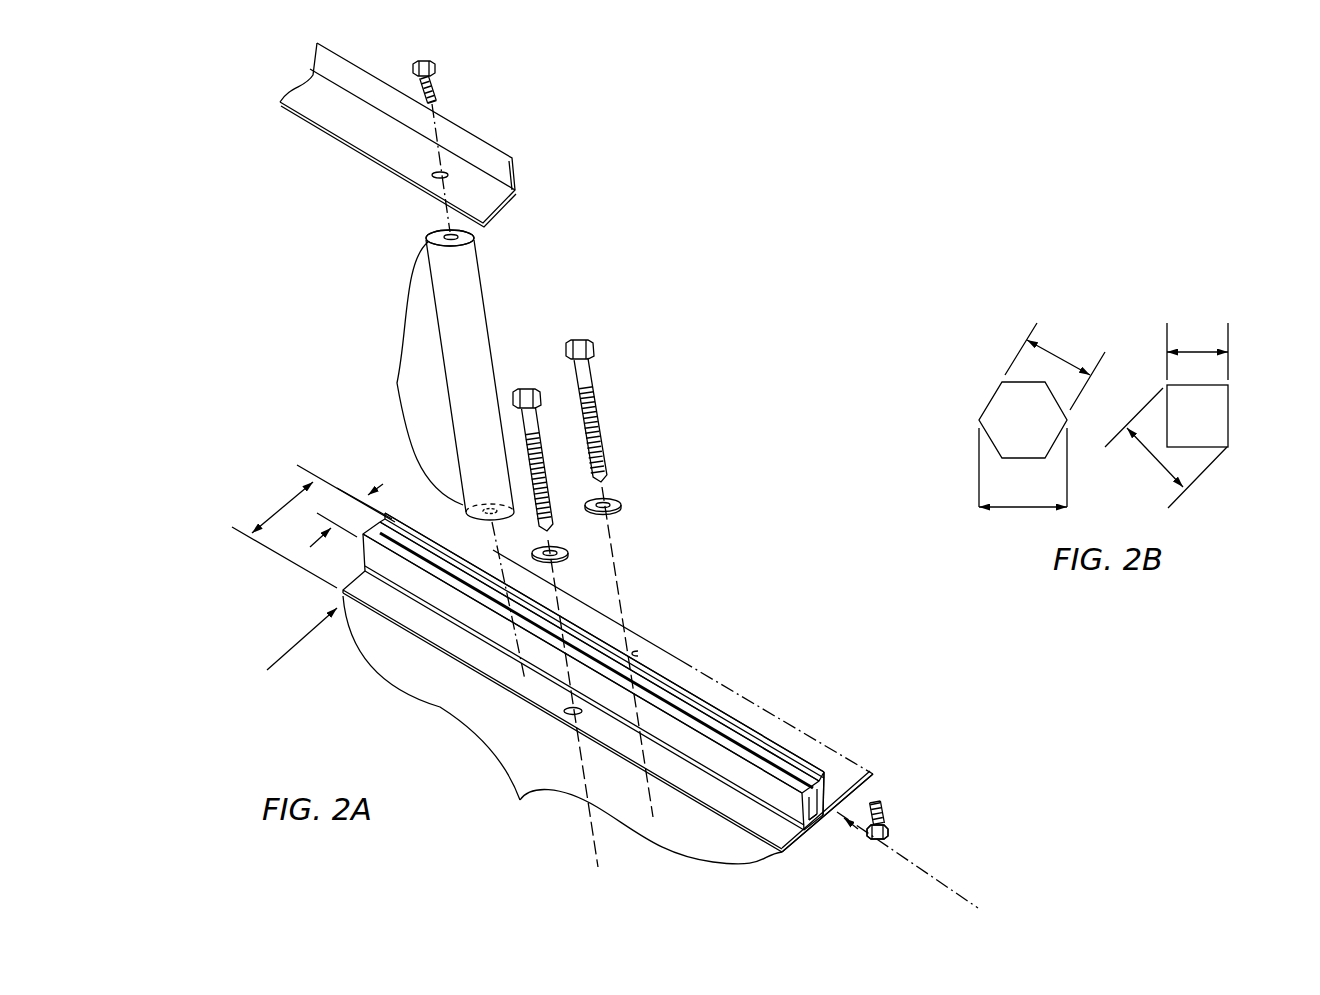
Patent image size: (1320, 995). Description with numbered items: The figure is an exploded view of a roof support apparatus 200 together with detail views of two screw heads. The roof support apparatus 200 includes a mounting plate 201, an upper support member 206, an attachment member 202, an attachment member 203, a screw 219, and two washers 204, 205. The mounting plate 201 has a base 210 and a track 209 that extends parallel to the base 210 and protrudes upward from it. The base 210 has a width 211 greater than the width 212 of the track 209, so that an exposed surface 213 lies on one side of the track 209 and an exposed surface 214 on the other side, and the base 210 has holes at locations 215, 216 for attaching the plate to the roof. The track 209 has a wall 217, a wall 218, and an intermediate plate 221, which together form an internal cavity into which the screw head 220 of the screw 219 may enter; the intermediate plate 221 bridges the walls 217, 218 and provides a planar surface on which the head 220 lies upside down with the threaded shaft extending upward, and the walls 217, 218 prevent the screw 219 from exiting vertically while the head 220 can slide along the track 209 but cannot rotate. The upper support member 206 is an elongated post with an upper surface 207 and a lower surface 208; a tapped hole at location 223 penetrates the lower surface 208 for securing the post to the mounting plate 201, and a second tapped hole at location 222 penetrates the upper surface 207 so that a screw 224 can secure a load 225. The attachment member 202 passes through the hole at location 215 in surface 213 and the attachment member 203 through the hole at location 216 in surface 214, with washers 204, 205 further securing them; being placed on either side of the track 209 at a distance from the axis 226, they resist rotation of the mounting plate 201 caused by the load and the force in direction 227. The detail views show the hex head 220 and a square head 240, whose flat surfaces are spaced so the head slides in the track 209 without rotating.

In FIG. 2A, the roof support apparatus 200 is at (307, 275).
In FIG. 2A, the mounting plate 201 is at (562, 730).
In FIG. 2A, the attachment member 202 is at (537, 423).
In FIG. 2A, the attachment member 203 is at (593, 367).
In FIG. 2A, the washer 204 is at (567, 550).
In FIG. 2A, the washer 205 is at (618, 497).
In FIG. 2A, the upper support member 206 is at (398, 380).
In FIG. 2A, the upper surface 207 is at (430, 227).
In FIG. 2A, the lower surface 208 is at (488, 522).
In FIG. 2A, the track 209 is at (802, 760).
In FIG. 2A, the base 210 is at (836, 812).
In FIG. 2A, the width of base 211 is at (278, 511).
In FIG. 2A, the width of track 212 is at (366, 491).
In FIG. 2A, the exposed surface 213 is at (740, 800).
In FIG. 2A, the exposed surface 214 is at (833, 777).
In FIG. 2A, the hole location 215 is at (556, 718).
In FIG. 2A, the hole location 216 is at (635, 650).
In FIG. 2A, the wall 217 is at (545, 663).
In FIG. 2A, the wall 218 is at (693, 690).
In FIG. 2A, the screw 219 is at (890, 793).
In FIG. 2A, the screw head 220 is at (880, 848).
In FIG. 2B, the screw head 220 is at (973, 398).
In FIG. 2A, the intermediate plate 221 is at (816, 833).
In FIG. 2A, the tapped hole location 222 is at (458, 236).
In FIG. 2A, the tapped hole location 223 is at (490, 503).
In FIG. 2A, the screw 224 is at (435, 82).
In FIG. 2A, the load 225 is at (355, 85).
In FIG. 2A, the axis 226 is at (920, 860).
In FIG. 2A, the force direction 227 is at (292, 645).
In FIG. 2B, the square head 240 is at (1293, 398).